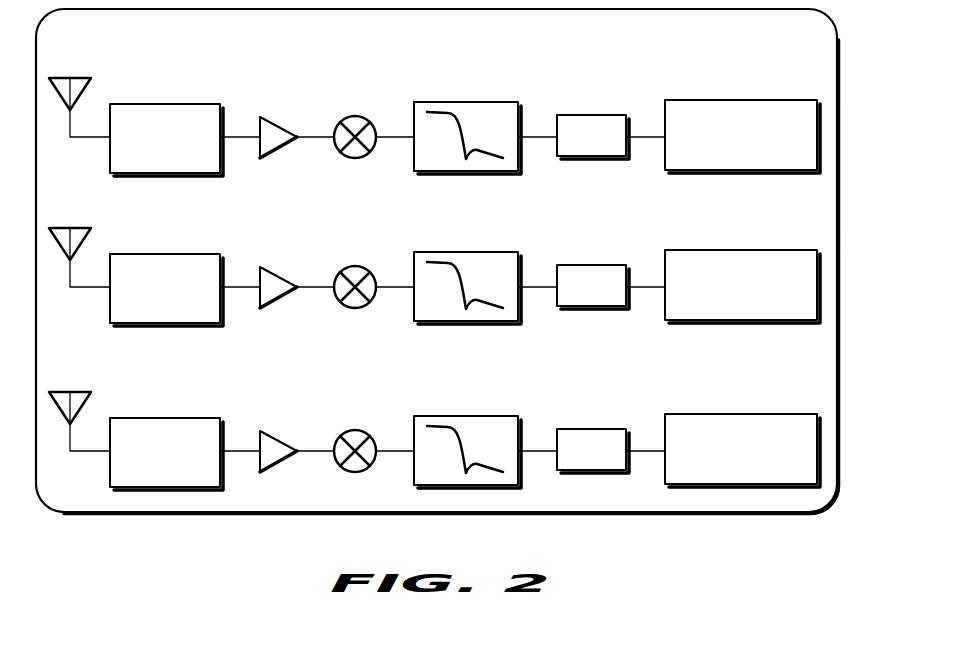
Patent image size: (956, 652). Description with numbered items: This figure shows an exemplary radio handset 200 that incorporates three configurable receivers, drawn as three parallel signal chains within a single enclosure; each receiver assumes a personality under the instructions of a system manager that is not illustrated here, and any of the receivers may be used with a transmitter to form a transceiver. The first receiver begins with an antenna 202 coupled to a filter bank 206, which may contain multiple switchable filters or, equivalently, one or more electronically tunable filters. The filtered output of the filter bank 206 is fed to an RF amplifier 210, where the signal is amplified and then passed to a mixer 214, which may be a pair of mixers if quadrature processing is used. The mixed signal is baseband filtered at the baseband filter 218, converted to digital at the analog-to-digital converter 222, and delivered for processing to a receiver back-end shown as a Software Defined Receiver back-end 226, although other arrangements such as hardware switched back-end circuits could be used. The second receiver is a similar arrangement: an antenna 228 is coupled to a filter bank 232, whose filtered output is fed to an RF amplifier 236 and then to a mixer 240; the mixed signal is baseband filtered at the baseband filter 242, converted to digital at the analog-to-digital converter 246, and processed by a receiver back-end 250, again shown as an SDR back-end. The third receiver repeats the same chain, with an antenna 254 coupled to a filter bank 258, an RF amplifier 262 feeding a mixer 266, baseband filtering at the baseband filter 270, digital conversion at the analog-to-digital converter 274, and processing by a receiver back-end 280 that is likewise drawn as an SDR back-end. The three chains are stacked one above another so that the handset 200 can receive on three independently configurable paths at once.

The radio handset 200 is at (616, 540).
The antenna 202 is at (70, 78).
The filter bank 206 is at (168, 105).
The RF amplifier 210 is at (273, 118).
The mixer 214 is at (353, 111).
The baseband filter 218 is at (466, 102).
The analog-to-digital converter 222 is at (592, 115).
The SDR back-end 226 is at (740, 100).
The antenna 228 is at (79, 236).
The filter bank 232 is at (166, 268).
The RF amplifier 236 is at (277, 269).
The mixer 240 is at (374, 265).
The baseband filter 242 is at (485, 266).
The analog-to-digital converter 246 is at (611, 266).
The receiver back-end 250 is at (742, 264).
The antenna 254 is at (79, 400).
The filter bank 258 is at (166, 432).
The RF amplifier 262 is at (277, 433).
The mixer 266 is at (374, 429).
The baseband filter 270 is at (485, 430).
The analog-to-digital converter 274 is at (611, 430).
The receiver back-end 280 is at (742, 428).